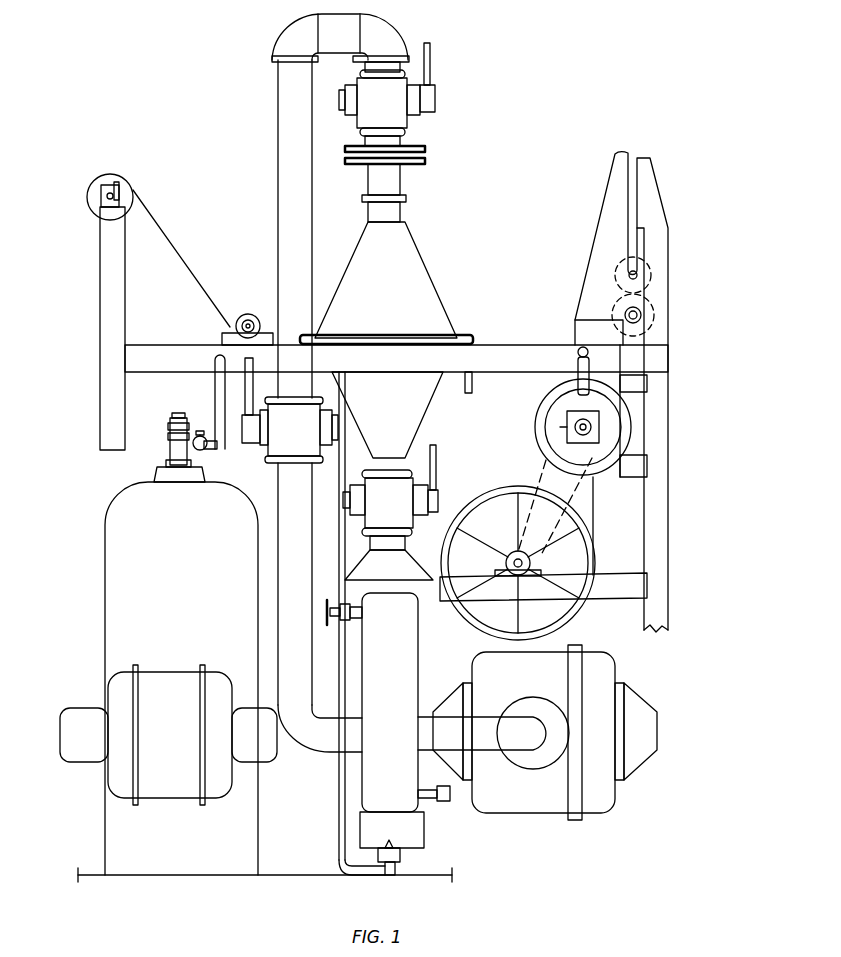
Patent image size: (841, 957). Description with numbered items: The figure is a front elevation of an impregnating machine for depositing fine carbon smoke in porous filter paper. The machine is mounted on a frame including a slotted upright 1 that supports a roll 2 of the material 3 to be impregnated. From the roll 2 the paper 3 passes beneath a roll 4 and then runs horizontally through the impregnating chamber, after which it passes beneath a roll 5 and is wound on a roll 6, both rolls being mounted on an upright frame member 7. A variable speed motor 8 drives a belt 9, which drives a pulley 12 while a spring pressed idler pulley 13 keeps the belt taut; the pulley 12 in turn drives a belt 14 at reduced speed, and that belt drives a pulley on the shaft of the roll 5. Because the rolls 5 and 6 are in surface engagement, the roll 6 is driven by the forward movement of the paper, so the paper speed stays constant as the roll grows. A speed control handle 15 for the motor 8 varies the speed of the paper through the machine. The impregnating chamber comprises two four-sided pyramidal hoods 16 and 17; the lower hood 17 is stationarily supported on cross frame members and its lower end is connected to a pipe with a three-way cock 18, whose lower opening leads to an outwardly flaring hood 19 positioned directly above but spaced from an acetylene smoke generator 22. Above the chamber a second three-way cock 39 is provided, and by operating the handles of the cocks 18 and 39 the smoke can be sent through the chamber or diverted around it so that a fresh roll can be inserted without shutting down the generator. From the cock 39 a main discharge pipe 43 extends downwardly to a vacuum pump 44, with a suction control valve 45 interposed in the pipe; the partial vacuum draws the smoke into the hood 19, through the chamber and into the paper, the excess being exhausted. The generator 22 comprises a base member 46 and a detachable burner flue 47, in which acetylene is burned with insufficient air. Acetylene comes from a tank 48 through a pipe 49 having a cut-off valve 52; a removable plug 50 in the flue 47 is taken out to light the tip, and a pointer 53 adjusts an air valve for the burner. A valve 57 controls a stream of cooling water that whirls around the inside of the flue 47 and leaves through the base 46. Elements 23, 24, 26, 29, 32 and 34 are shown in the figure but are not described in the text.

The slotted upright 1 is at (110, 290).
The roll 2 is at (98, 192).
The material 3 is at (157, 215).
The roll 4 is at (248, 316).
The roll 5 is at (650, 313).
The roll 6 is at (650, 272).
The upright frame member 7 is at (648, 203).
The variable speed motor 8 is at (622, 445).
The belt 9 is at (593, 510).
The pulley 12 is at (520, 620).
The spring pressed idler pulley 13 is at (563, 427).
The belt 14 is at (548, 460).
The speed control handle 15 is at (574, 362).
The pyramidal hood 16 is at (400, 257).
The lower hood 17 is at (413, 432).
The three-way cock 18 is at (400, 488).
The outwardly flaring hood 19 is at (375, 572).
The acetylene smoke generator 22 is at (412, 635).
The collar 23 is at (395, 217).
The pipe section 24 is at (395, 180).
The support bar 26 is at (400, 337).
The bracket 29 is at (472, 392).
The lower flange 32 is at (425, 161).
The upper flange 34 is at (425, 150).
The three-way cock 39 is at (398, 110).
The main discharge pipe 43 is at (290, 98).
The vacuum pump 44 is at (515, 805).
The suction control valve 45 is at (285, 440).
The base member 46 is at (415, 838).
The detachable burner flue 47 is at (340, 798).
The tank 48 is at (130, 576).
The pipe 49 is at (219, 385).
The removable plug 50 is at (445, 802).
The cut-off valve 52 is at (199, 436).
The pointer 53 is at (392, 856).
The valve 57 is at (347, 618).